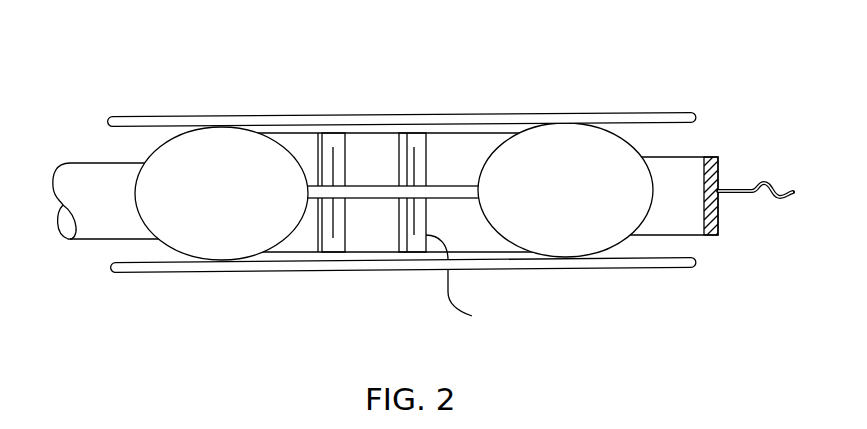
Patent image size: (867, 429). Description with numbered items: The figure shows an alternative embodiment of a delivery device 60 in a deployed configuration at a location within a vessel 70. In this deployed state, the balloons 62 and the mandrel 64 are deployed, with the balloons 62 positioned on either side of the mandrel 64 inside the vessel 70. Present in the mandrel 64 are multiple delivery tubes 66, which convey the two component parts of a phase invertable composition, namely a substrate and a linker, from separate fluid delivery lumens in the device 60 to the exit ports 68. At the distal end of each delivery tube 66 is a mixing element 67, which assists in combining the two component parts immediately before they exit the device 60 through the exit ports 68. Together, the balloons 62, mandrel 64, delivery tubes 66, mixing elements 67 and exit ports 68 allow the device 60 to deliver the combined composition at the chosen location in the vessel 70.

The delivery device 60 is at (92, 258).
The balloons 62 is at (233, 201).
The mandrel 64 is at (362, 158).
The delivery tubes 66 is at (463, 283).
The mixing element 67 is at (414, 235).
The exit ports 68 is at (410, 132).
The vessel 70 is at (365, 270).